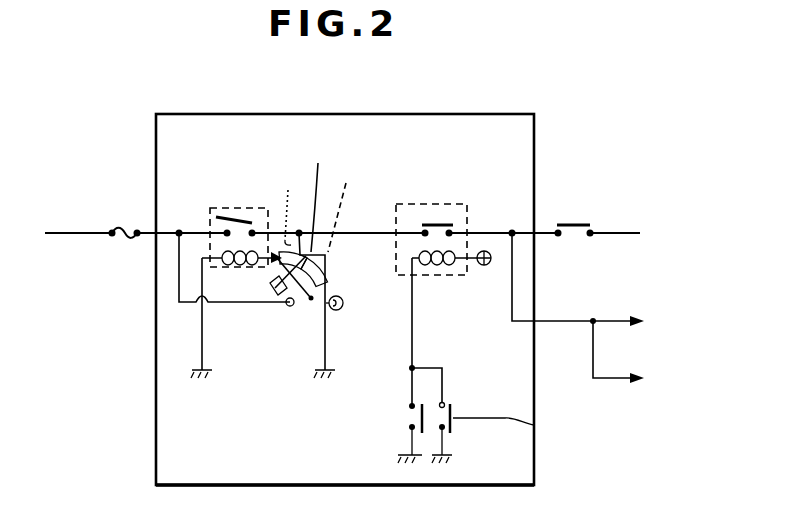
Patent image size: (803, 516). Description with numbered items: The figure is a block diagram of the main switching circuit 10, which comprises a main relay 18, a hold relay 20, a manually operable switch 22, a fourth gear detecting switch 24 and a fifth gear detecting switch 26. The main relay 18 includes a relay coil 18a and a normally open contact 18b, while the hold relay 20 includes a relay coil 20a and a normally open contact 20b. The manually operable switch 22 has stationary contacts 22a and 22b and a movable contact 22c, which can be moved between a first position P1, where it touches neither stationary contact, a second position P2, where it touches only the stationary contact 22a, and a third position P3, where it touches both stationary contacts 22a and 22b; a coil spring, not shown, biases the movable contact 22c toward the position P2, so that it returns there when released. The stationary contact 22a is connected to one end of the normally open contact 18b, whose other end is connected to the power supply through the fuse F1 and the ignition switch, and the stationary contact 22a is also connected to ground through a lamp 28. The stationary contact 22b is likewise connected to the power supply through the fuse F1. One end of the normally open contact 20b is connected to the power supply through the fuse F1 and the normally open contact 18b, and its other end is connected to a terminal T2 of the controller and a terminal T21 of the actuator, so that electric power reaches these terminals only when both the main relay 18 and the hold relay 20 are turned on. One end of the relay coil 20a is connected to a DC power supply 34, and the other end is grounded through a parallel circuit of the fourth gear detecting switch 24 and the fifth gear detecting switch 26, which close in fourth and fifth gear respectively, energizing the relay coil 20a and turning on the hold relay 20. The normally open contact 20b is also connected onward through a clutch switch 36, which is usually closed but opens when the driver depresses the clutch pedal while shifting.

The main switching circuit 10 is at (243, 114).
The main relay 18 is at (232, 208).
The relay coil 18a is at (241, 266).
The normally open contact 18b is at (216, 217).
The hold relay 20 is at (442, 203).
The relay coil 20a is at (440, 266).
The normally open contact 20b is at (453, 224).
The manually operable switch 22 is at (257, 364).
The stationary contact 22a is at (268, 290).
The stationary contact 22b is at (281, 300).
The movable contact 22c is at (308, 290).
The fourth gear detecting switch 24 is at (420, 414).
The fifth gear detecting switch 26 is at (534, 425).
The lamp 28 is at (338, 310).
The DC power supply 34 is at (484, 265).
The clutch switch 36 is at (574, 226).
The fuse F1 is at (128, 237).
The first position P1 is at (282, 205).
The second position P2 is at (319, 194).
The third position P3 is at (343, 207).
The terminal T2 is at (651, 325).
The terminal T21 is at (656, 383).